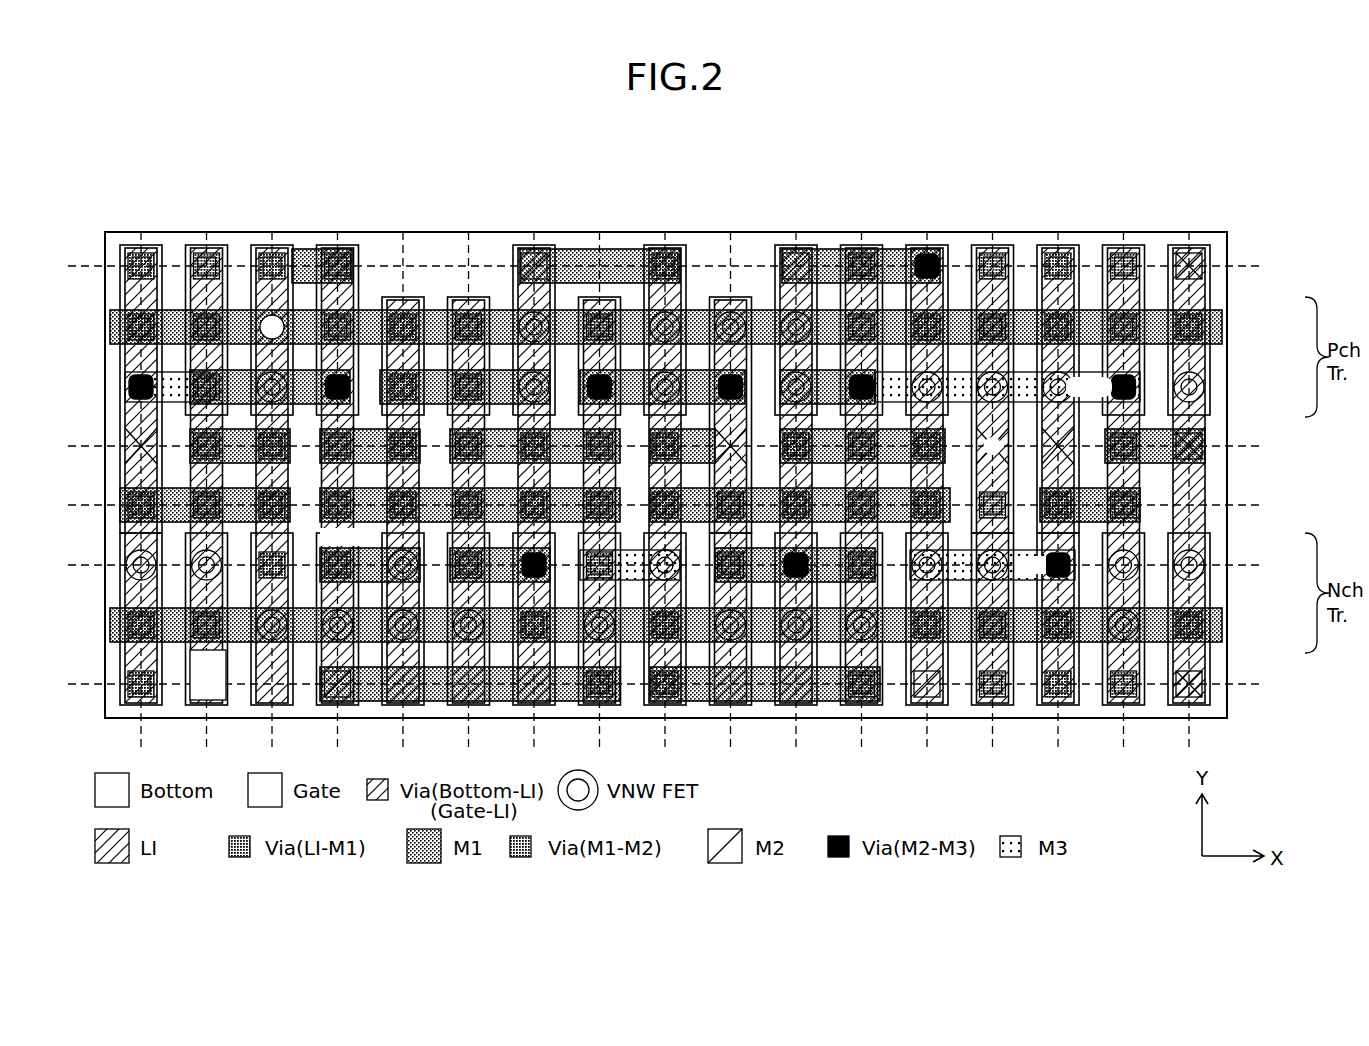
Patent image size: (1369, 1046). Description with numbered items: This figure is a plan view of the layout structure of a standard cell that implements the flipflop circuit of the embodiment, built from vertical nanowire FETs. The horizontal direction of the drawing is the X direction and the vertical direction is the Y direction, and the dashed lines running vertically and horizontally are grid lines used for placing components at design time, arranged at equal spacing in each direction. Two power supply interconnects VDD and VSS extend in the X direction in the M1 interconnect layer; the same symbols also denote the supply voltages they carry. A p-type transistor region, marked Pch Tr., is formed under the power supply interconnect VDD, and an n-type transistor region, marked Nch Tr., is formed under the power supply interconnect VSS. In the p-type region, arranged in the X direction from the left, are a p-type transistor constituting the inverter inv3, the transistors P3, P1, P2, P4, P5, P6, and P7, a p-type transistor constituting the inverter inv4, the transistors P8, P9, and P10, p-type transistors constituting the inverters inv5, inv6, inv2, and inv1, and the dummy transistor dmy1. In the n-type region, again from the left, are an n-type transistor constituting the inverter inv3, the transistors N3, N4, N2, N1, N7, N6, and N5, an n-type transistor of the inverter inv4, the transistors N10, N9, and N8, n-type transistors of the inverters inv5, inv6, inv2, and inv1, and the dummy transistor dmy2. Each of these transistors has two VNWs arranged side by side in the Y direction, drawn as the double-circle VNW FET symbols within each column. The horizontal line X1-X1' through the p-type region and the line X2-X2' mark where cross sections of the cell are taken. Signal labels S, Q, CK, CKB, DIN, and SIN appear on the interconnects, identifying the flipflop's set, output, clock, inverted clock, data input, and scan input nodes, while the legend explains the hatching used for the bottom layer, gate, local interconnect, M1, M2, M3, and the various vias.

The inverter inv1 is at (1124, 232).
The inverter inv2 is at (1058, 232).
The inverter inv3 is at (141, 232).
The inverter inv4 is at (665, 232).
The inverter inv5 is at (927, 232).
The inverter inv6 is at (992, 232).
The transistor P1 is at (272, 232).
The transistor P2 is at (338, 232).
The transistor P3 is at (206, 232).
The transistor P4 is at (403, 232).
The transistor P5 is at (468, 232).
The transistor P6 is at (534, 232).
The transistor P7 is at (600, 232).
The transistor P8 is at (730, 232).
The transistor P9 is at (796, 232).
The transistor P10 is at (862, 232).
The transistor N1 is at (403, 437).
The transistor N2 is at (338, 437).
The transistor N3 is at (207, 437).
The transistor N4 is at (272, 437).
The transistor N5 is at (600, 437).
The transistor N6 is at (534, 437).
The transistor N7 is at (469, 437).
The transistor N8 is at (862, 437).
The transistor N9 is at (796, 437).
The transistor N10 is at (731, 437).
The dummy transistor dmy1 is at (1189, 232).
The dummy transistor dmy2 is at (1189, 437).
The power supply interconnect VDD is at (1263, 327).
The power supply interconnect VSS is at (1263, 625).
The line X1-X1' X1 is at (1263, 387).
The line X2-X2' X2 is at (670, 446).
The set signal node S is at (272, 327).
The output node Q is at (993, 446).
The clock signal node CK is at (1031, 565).
The inverted clock signal node CKB is at (1089, 387).
The data input node DIN is at (370, 555).
The scan input node SIN is at (208, 675).